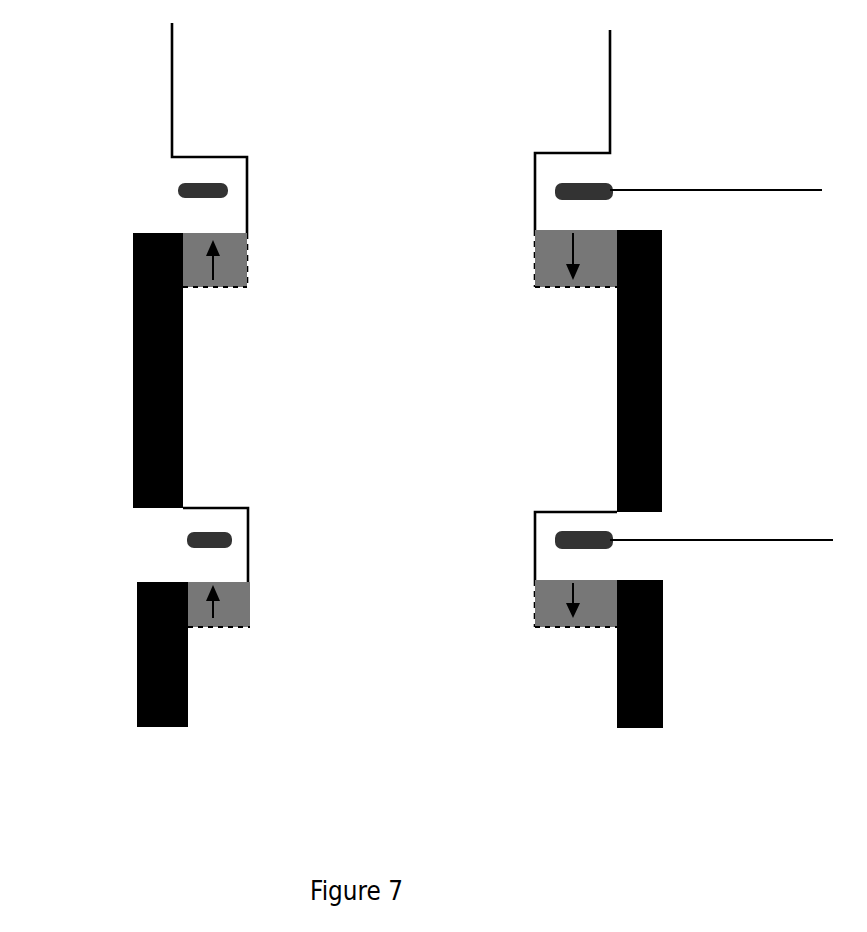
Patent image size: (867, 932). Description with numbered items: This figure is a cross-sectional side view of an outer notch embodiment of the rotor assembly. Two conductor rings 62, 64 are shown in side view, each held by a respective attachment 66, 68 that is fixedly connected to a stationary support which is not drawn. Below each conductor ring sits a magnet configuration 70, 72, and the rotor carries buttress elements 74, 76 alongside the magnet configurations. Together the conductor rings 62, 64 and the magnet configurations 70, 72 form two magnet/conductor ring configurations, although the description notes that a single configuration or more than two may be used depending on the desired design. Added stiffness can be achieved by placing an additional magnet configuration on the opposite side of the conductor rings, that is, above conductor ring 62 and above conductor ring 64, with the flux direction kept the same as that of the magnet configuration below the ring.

The conductor ring 62 is at (188, 183).
The conductor ring 64 is at (218, 532).
The attachment 66 is at (702, 189).
The attachment 68 is at (735, 540).
The magnet configuration 70 is at (172, 106).
The magnet configuration 72 is at (540, 628).
The buttress element 74 is at (663, 345).
The buttress element 76 is at (665, 668).